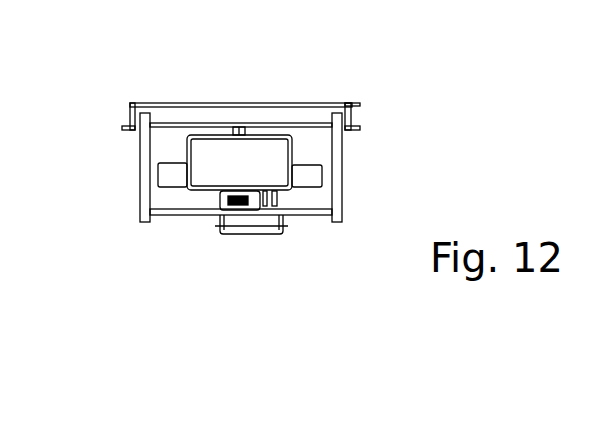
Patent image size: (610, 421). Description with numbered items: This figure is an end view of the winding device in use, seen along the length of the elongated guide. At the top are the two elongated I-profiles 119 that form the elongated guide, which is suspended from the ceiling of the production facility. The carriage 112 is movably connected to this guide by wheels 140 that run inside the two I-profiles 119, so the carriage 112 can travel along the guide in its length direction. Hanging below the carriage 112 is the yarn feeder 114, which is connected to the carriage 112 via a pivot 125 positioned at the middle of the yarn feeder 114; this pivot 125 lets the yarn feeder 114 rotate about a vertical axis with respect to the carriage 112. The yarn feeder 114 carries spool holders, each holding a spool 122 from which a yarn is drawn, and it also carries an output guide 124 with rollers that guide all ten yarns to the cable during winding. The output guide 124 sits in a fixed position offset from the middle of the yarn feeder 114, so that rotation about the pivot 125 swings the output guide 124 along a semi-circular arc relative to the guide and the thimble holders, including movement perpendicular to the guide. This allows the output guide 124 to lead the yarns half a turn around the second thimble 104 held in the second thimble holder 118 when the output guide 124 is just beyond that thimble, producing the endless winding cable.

The second thimble 104 is at (237, 206).
The carriage 112 is at (270, 99).
The yarn feeder 114 is at (300, 134).
The second thimble holder 118 is at (383, 190).
The elongated I-profiles 119 is at (127, 104).
The spool 122 is at (167, 178).
The output guide 124 is at (259, 206).
The pivot 125 is at (233, 128).
The wheels 140 is at (145, 113).